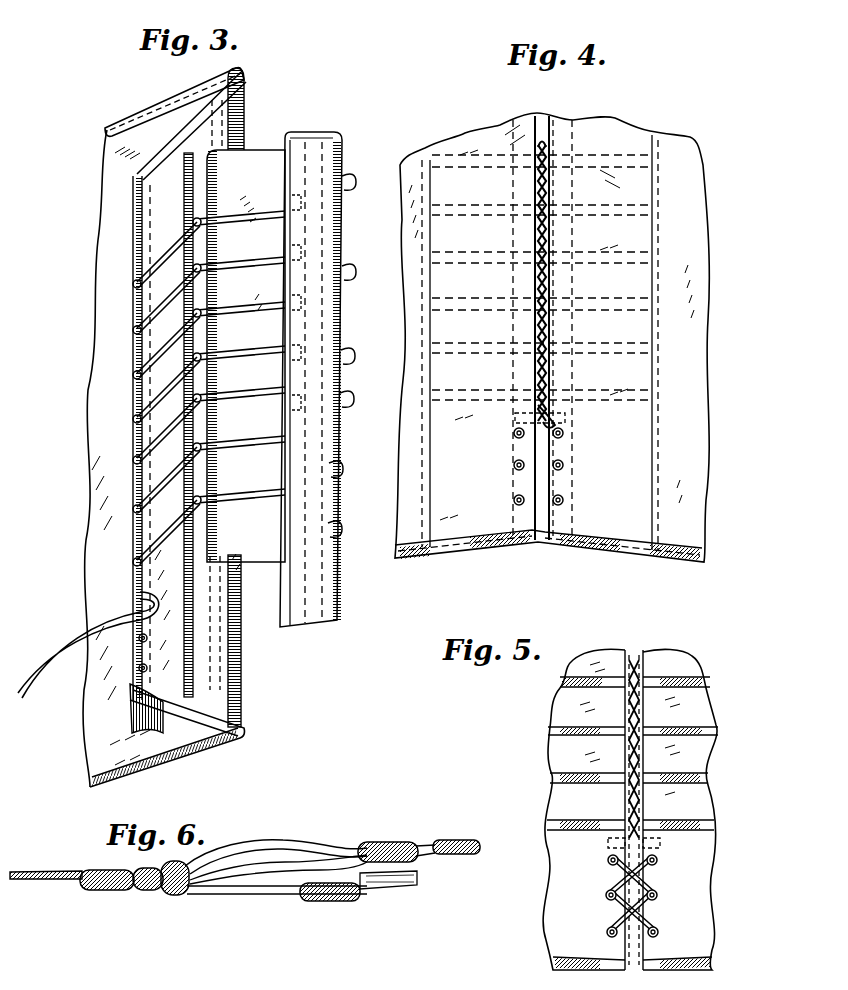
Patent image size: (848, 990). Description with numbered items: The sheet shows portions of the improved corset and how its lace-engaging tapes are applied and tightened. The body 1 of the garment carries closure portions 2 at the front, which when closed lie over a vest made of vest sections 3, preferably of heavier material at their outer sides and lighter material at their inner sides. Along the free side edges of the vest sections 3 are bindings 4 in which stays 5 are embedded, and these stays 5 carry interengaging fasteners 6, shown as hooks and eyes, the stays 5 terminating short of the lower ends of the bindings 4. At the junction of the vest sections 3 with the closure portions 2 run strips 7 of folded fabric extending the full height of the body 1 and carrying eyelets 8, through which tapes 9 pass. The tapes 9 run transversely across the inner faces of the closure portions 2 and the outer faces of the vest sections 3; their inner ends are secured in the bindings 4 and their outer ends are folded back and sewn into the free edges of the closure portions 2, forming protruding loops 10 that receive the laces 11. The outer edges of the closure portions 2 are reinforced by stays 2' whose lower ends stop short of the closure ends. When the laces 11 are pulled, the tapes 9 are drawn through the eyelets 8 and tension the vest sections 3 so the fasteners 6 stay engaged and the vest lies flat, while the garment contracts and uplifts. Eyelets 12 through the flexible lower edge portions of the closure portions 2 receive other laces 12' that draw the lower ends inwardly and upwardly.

In FIG. 3, the body 1 is at (117, 167).
In FIG. 4, the body 1 is at (680, 267).
In FIG. 6, the body 1 is at (42, 881).
In FIG. 3, the closure portions 2 is at (189, 397).
In FIG. 4, the closure portions 2 is at (566, 317).
In FIG. 5, the closure portions 2 is at (630, 791).
In FIG. 6, the closure portions 2 is at (277, 914).
In FIG. 6, the stays 2' is at (358, 907).
In FIG. 3, the vest sections 3 is at (262, 152).
In FIG. 6, the vest sections 3 is at (290, 843).
In FIG. 3, the bindings 4 is at (327, 167).
In FIG. 6, the bindings 4 is at (428, 846).
In FIG. 3, the stays 5 is at (323, 440).
In FIG. 6, the stays 5 is at (470, 840).
In FIG. 3, the interengaging fasteners 6 is at (352, 188).
In FIG. 3, the strips 7 is at (192, 592).
In FIG. 6, the strips 7 is at (232, 858).
In FIG. 3, the eyelets 8 is at (142, 250).
In FIG. 6, the eyelets 8 is at (192, 893).
In FIG. 3, the tapes 9 is at (260, 213).
In FIG. 4, the tapes 9 is at (622, 260).
In FIG. 5, the tapes 9 is at (560, 730).
In FIG. 6, the tapes 9 is at (313, 855).
In FIG. 4, the loops 10 is at (530, 247).
In FIG. 6, the loops 10 is at (347, 878).
In FIG. 3, the laces 11 is at (47, 642).
In FIG. 4, the laces 11 is at (545, 430).
In FIG. 5, the laces 11 is at (648, 793).
In FIG. 3, the eyelets 12 is at (94, 669).
In FIG. 4, the eyelets 12 is at (538, 466).
In FIG. 5, the eyelets 12 is at (629, 887).
In FIG. 5, the laces 12' is at (592, 924).